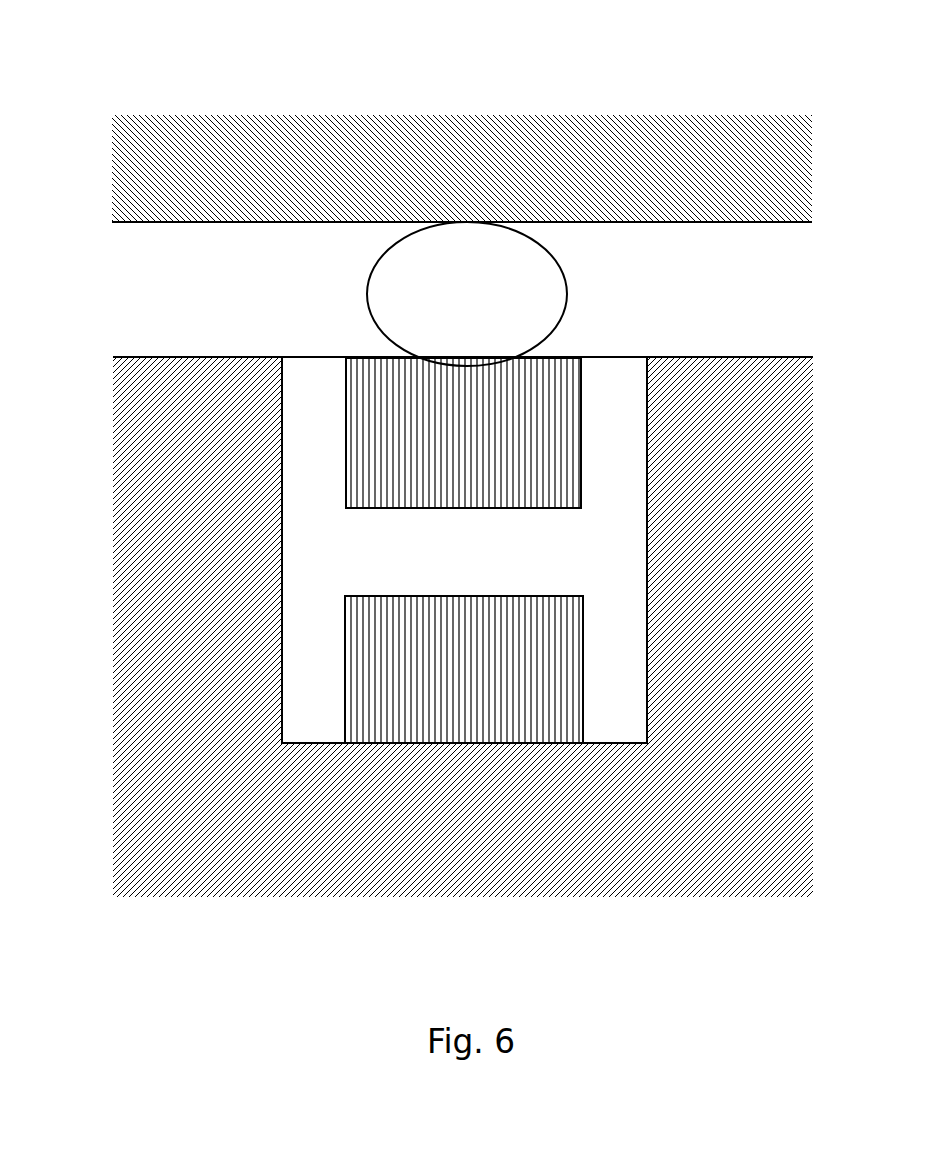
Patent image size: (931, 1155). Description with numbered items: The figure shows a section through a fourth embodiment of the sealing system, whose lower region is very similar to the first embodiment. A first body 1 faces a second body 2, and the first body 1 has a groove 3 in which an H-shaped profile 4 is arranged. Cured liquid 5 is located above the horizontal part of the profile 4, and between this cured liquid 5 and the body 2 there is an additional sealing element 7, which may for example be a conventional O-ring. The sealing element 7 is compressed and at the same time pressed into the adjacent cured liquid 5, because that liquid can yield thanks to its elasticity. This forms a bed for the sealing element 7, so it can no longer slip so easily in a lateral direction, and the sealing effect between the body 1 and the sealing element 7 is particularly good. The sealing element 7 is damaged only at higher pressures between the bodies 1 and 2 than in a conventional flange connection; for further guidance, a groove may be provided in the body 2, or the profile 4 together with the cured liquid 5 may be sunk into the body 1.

The first body 1 is at (742, 865).
The second body 2 is at (721, 147).
The groove 3 is at (366, 743).
The H-shaped profile 4 is at (295, 635).
The cured liquid 5 is at (367, 426).
The sealing element 7 is at (419, 257).